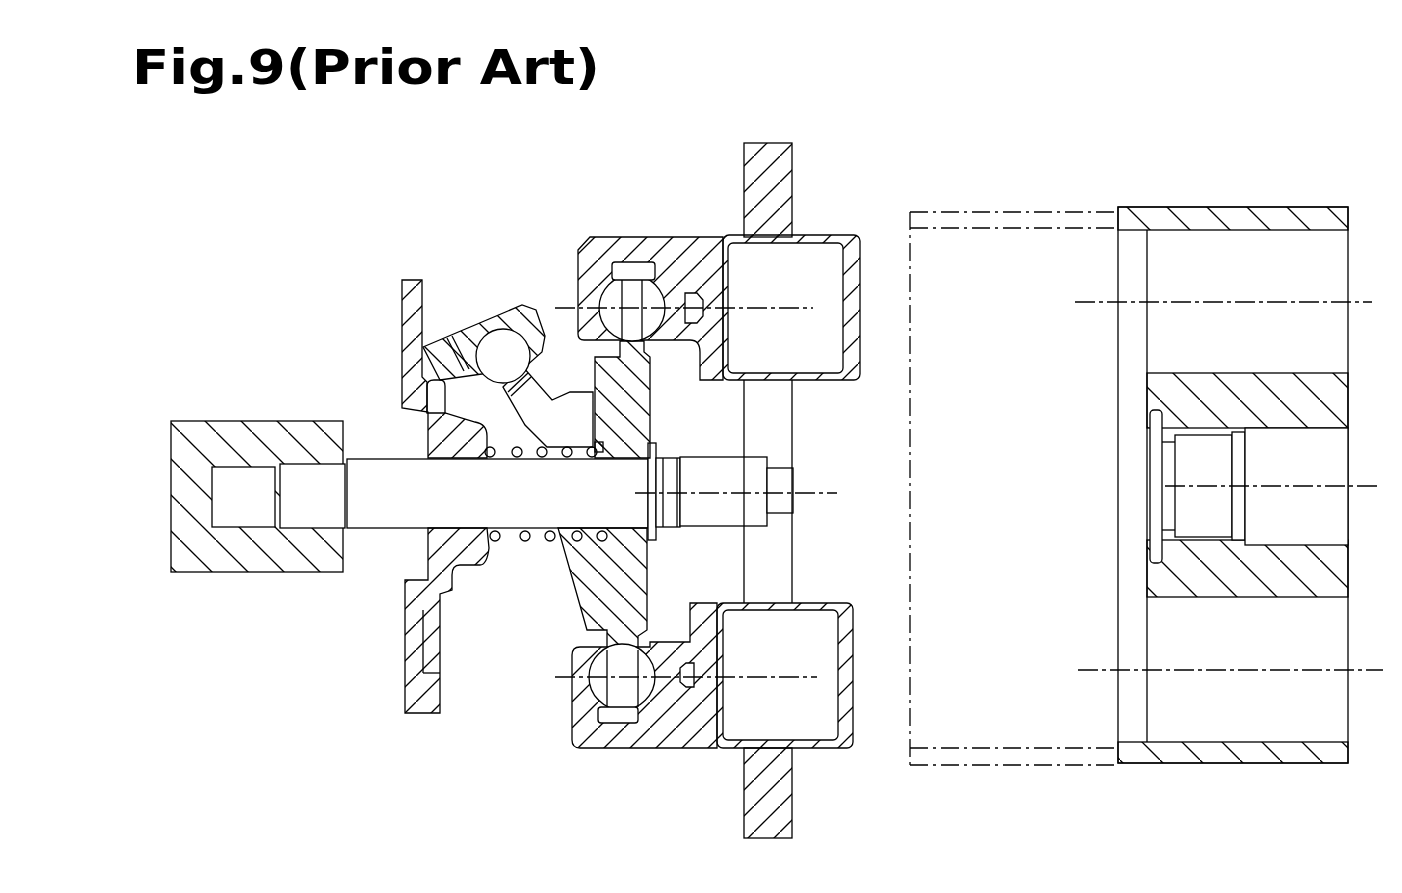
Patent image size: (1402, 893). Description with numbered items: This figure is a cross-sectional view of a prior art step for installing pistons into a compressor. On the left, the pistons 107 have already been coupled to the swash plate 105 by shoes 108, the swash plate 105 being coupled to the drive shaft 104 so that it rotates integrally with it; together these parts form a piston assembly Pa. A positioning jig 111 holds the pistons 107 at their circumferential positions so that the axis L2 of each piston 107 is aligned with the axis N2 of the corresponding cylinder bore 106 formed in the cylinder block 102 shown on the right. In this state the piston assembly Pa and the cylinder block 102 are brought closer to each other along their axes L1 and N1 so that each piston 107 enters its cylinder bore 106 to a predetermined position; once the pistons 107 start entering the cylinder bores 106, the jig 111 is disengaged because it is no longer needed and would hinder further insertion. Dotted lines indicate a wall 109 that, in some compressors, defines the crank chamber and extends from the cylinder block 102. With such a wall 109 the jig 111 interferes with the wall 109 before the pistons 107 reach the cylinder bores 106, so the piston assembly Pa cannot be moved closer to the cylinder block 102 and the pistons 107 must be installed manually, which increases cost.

The cylinder block 102 is at (1200, 767).
The drive shaft 104 is at (373, 533).
The swash plate 105 is at (582, 597).
The cylinder bore 106 is at (1210, 238).
The piston 107 is at (700, 250).
The shoe 108 is at (633, 262).
The wall 109 is at (938, 210).
The positioning jig 111 is at (777, 145).
The piston assembly Pa is at (455, 268).
The axis of the piston assembly L1 is at (808, 493).
The axis of the piston L2 is at (753, 307).
The axis of the cylinder block N1 is at (1358, 486).
The axis of the cylinder bore N2 is at (1213, 302).